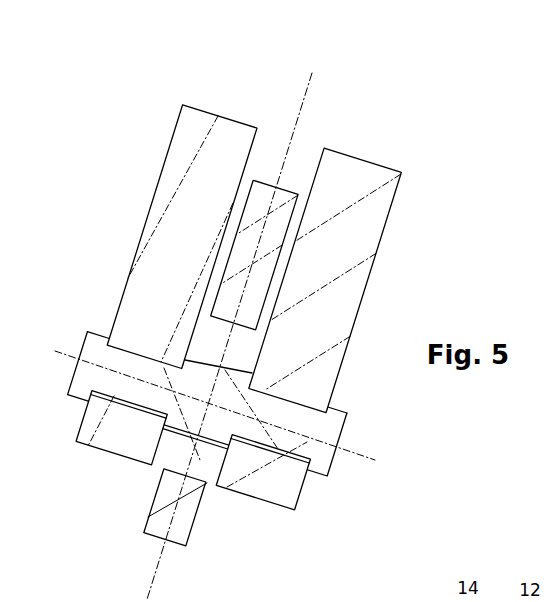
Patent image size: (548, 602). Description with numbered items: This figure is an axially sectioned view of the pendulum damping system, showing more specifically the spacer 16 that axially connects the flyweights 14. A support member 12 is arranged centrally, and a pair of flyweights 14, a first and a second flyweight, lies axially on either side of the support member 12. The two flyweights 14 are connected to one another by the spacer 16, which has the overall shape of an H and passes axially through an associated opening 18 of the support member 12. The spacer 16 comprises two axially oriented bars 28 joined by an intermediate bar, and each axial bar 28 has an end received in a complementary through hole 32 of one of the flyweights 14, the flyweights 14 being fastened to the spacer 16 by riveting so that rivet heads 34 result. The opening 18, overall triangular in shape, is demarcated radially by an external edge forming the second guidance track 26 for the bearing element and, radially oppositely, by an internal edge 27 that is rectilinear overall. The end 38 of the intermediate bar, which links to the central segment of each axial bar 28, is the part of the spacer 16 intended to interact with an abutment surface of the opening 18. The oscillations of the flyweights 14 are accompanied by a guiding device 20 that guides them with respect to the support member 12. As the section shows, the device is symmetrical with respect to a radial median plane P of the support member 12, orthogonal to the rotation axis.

The support member 12 is at (278, 215).
The flyweight 14 is at (186, 206).
The spacer 16 is at (198, 377).
The opening 18 is at (246, 347).
The guiding device 20 is at (353, 471).
The second guidance track 26 is at (215, 320).
The internal edge 27 is at (177, 467).
The axial bar 28 is at (130, 365).
The hole 32 is at (140, 408).
The rivet head 34 is at (100, 335).
The end of intermediate bar 38 is at (212, 423).
The radial median plane P is at (313, 84).